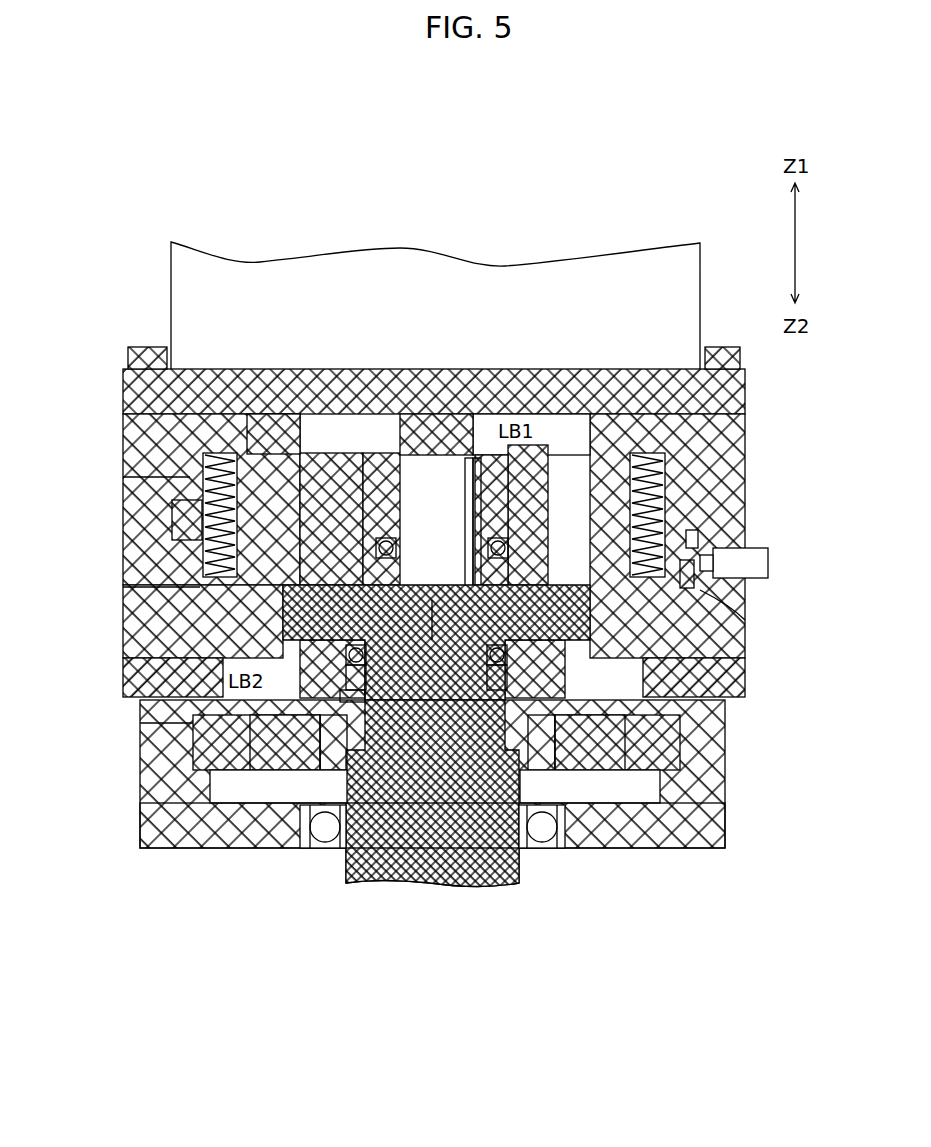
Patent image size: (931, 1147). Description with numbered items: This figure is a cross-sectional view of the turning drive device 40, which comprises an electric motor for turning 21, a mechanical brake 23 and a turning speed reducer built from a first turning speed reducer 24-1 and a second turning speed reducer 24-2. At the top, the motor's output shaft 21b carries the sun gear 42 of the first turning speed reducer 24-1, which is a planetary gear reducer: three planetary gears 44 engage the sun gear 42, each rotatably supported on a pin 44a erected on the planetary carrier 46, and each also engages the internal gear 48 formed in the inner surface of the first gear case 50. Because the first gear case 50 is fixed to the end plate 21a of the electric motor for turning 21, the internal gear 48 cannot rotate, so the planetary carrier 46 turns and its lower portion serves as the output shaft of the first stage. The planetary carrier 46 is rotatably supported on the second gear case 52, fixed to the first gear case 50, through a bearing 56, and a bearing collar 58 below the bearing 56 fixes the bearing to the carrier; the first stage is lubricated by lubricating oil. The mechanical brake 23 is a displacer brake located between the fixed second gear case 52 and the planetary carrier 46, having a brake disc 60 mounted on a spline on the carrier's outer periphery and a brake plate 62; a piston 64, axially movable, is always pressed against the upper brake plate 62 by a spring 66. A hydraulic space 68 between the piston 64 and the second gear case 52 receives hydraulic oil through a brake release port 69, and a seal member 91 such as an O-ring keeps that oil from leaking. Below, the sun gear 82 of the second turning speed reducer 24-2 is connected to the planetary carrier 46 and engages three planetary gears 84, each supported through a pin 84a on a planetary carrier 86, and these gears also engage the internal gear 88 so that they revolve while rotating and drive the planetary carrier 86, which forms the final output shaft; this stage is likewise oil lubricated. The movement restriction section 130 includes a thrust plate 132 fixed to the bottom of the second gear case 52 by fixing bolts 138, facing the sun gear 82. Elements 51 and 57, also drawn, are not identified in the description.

The turning drive device 40 is at (146, 178).
The electric motor for turning 21 is at (541, 272).
The end plate 21a is at (127, 390).
The output shaft 21b is at (432, 600).
The mechanical brake 23 is at (273, 639).
The first turning speed reducer 24-1 is at (387, 363).
The second turning speed reducer 24-2 is at (490, 781).
The sun gear 42 is at (386, 490).
The planetary gear 44 is at (308, 480).
The pin 44a is at (330, 460).
The planetary carrier 46 is at (428, 590).
The internal gear 48 is at (285, 500).
The first gear case 50 is at (135, 441).
The bearing 51 is at (490, 460).
The second gear case 52 is at (135, 558).
The bearing 56 is at (338, 688).
The right plate 57 is at (735, 680).
The bearing collar 58 is at (140, 681).
The brake disc 60 is at (345, 660).
The brake plate 62 is at (352, 645).
The piston 64 is at (182, 517).
The spring 66 is at (175, 483).
The hydraulic space 68 is at (688, 583).
The brake release port 69 is at (762, 566).
The sun gear 82 is at (668, 735).
The planetary gear 84 is at (615, 748).
The pin 84a is at (588, 768).
The planetary carrier 86 is at (570, 783).
The internal gear 88 is at (590, 793).
The seal member 91 is at (690, 548).
The movement restriction section 130 is at (333, 848).
The thrust plate 132 is at (430, 665).
The fixing bolt 138 is at (348, 700).